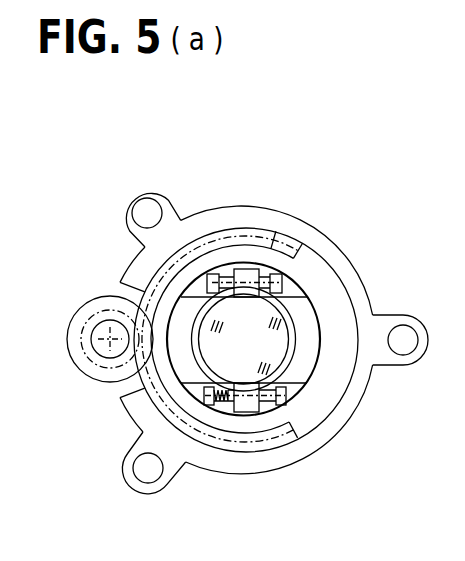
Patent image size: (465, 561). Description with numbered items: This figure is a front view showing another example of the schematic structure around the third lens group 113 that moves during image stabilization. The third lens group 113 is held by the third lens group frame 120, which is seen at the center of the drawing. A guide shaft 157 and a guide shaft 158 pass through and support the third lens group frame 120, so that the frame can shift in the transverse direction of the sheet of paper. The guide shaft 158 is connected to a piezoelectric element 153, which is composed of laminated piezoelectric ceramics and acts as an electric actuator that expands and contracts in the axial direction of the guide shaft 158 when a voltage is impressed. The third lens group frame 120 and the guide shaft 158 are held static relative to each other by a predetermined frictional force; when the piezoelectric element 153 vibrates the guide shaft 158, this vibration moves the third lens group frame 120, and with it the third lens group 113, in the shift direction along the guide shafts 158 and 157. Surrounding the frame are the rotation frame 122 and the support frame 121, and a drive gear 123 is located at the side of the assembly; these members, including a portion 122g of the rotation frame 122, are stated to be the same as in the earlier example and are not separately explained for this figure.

The third lens group 113 is at (255, 312).
The third lens group frame 120 is at (196, 332).
The support frame 121 is at (343, 266).
The rotation frame 122 is at (318, 408).
The engaging tab of adjustment ring 122g is at (278, 440).
The drive gear 123 is at (92, 318).
The piezoelectric element 153 is at (214, 402).
The guide shaft 157 is at (224, 269).
The guide shaft 158 is at (224, 407).